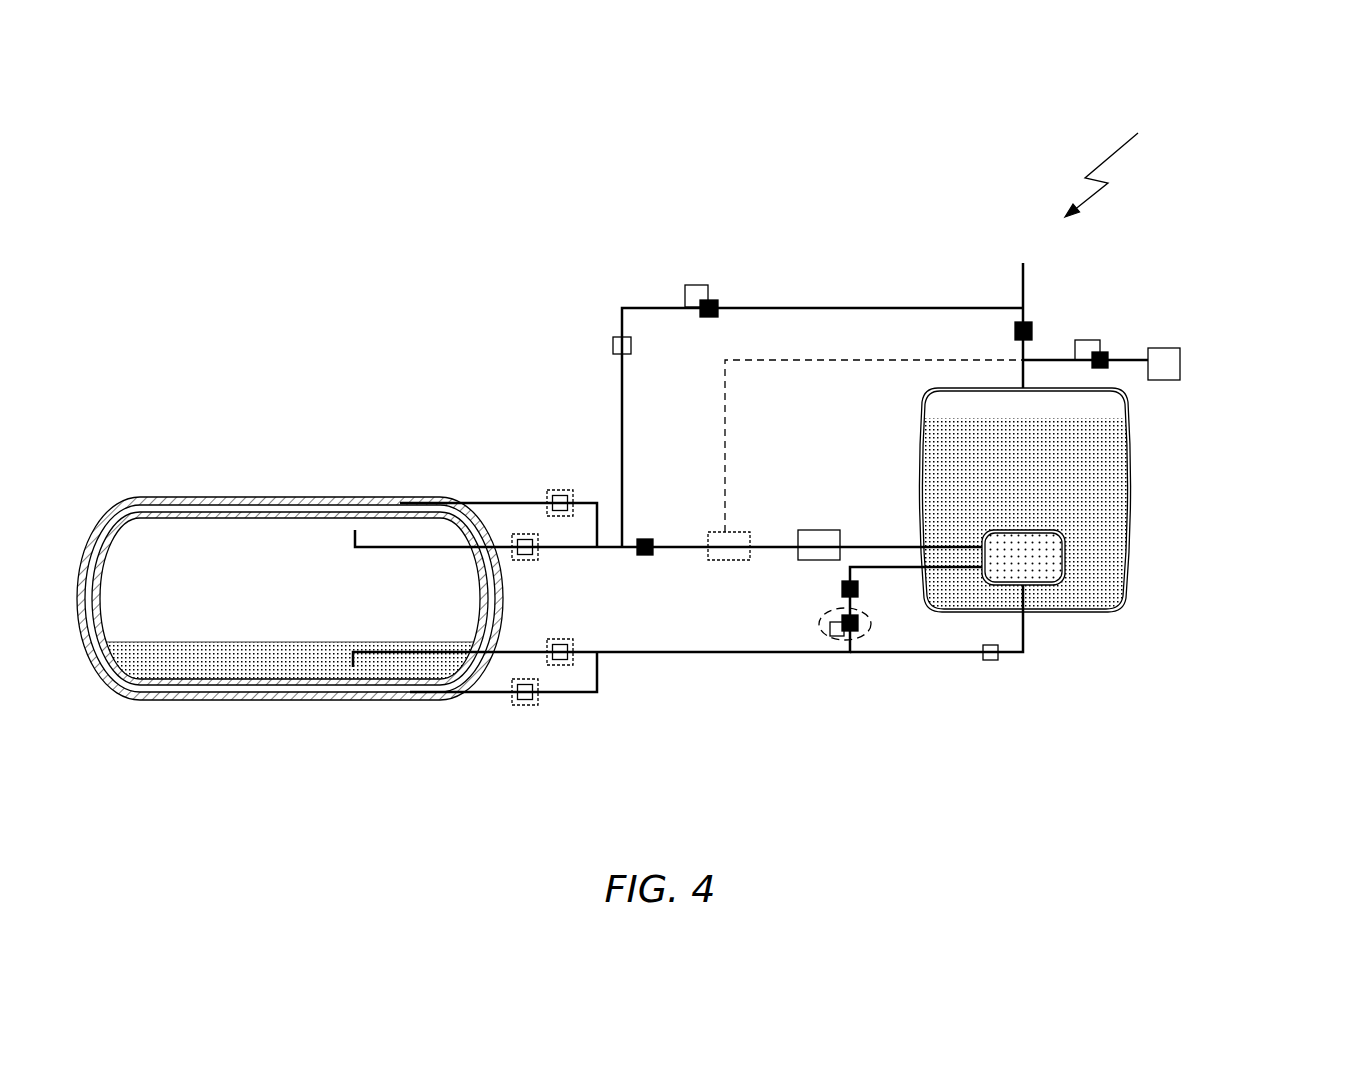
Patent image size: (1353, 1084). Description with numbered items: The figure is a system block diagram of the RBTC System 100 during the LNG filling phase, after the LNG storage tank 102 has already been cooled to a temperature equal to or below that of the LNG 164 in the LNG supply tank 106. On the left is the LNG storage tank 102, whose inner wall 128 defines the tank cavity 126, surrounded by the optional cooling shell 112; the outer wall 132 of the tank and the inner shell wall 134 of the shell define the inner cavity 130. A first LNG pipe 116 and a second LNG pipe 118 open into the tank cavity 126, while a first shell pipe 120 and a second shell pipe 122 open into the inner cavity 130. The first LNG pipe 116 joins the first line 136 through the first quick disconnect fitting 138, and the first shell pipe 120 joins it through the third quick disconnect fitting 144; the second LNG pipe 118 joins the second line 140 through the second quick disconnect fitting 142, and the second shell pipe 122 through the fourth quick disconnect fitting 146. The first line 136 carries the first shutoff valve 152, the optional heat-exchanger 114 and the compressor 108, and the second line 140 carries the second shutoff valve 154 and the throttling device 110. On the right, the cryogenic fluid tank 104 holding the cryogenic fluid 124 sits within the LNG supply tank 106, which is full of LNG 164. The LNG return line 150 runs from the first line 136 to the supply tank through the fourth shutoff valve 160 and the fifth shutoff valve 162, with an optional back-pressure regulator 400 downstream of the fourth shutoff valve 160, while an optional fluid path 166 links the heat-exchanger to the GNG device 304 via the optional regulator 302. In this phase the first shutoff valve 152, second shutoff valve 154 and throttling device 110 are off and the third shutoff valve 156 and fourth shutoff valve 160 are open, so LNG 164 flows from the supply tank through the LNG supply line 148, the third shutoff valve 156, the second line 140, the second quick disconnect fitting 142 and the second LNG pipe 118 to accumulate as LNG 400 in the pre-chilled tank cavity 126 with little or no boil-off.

The RBTC System 100 is at (1146, 162).
The LNG storage tank 102 is at (160, 496).
The cryogenic fluid tank 104 is at (1139, 526).
The LNG supply tank 106 is at (1110, 600).
The compressor 108 is at (822, 530).
The throttling device 110 is at (828, 640).
The optional cooling shell 112 is at (290, 585).
The optional heat-exchanger 114 is at (725, 562).
The first LNG pipe 116 is at (355, 555).
The second LNG pipe 118 is at (370, 650).
The first shell pipe 120 is at (477, 503).
The second shell pipe 122 is at (470, 700).
The cryogenic fluid 124 is at (1045, 552).
The tank cavity 126 is at (290, 598).
The inner wall 128 is at (290, 668).
The inner cavity 130 is at (163, 692).
The outer wall 132 is at (287, 692).
The inner shell wall 134 is at (233, 690).
The first line 136 is at (858, 545).
The first quick disconnect fitting (QD1) 138 is at (525, 560).
The second line 140 is at (812, 652).
The second quick disconnect fitting (QD2) 142 is at (568, 640).
The third quick disconnect fitting (QD3) 144 is at (550, 492).
The fourth quick disconnect fitting (QD4) 146 is at (525, 705).
The LNG supply line 148 is at (987, 660).
The LNG return line 150 is at (622, 383).
The first shutoff valve (SV1) 152 is at (645, 538).
The second shutoff valve (SV2) 154 is at (840, 589).
The third shutoff valve (SV3) 156 is at (1000, 662).
The fourth shutoff valve (SV4) 160 is at (612, 346).
The fifth shutoff valve (SV5) 162 is at (1032, 331).
The LNG 164 is at (1100, 428).
The optional fluid path 166 is at (775, 360).
The optional regulator 302 is at (1110, 356).
The gaseous natural gas (GNG) device 304 is at (1183, 358).
The LNG / optional back-pressure regulator 400 is at (716, 302).